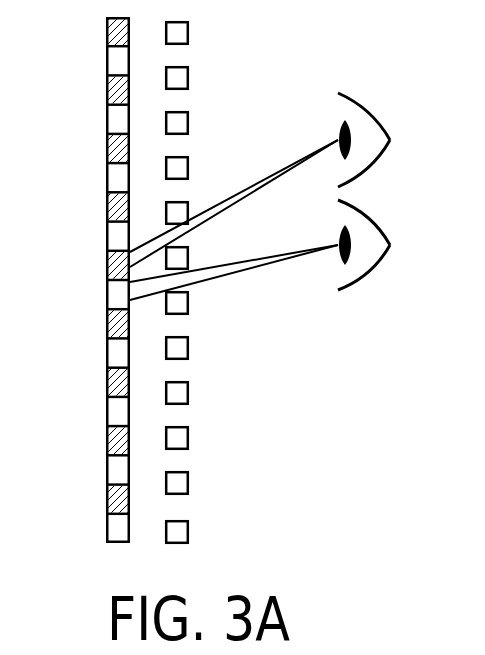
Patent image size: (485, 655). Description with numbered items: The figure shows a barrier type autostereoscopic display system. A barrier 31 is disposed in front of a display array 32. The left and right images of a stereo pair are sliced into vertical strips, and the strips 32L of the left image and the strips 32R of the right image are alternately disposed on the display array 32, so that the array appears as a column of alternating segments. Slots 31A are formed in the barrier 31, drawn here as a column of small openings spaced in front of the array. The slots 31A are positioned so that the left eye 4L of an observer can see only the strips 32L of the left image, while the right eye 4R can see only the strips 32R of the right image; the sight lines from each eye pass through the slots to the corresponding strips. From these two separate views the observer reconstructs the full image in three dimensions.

The right eye 4R is at (377, 130).
The left eye 4L is at (375, 258).
The barrier 31 is at (189, 530).
The slots 31A is at (178, 460).
The display array 32 is at (89, 476).
The strips of the right image 32R is at (106, 33).
The strips of the left image 32L is at (106, 62).